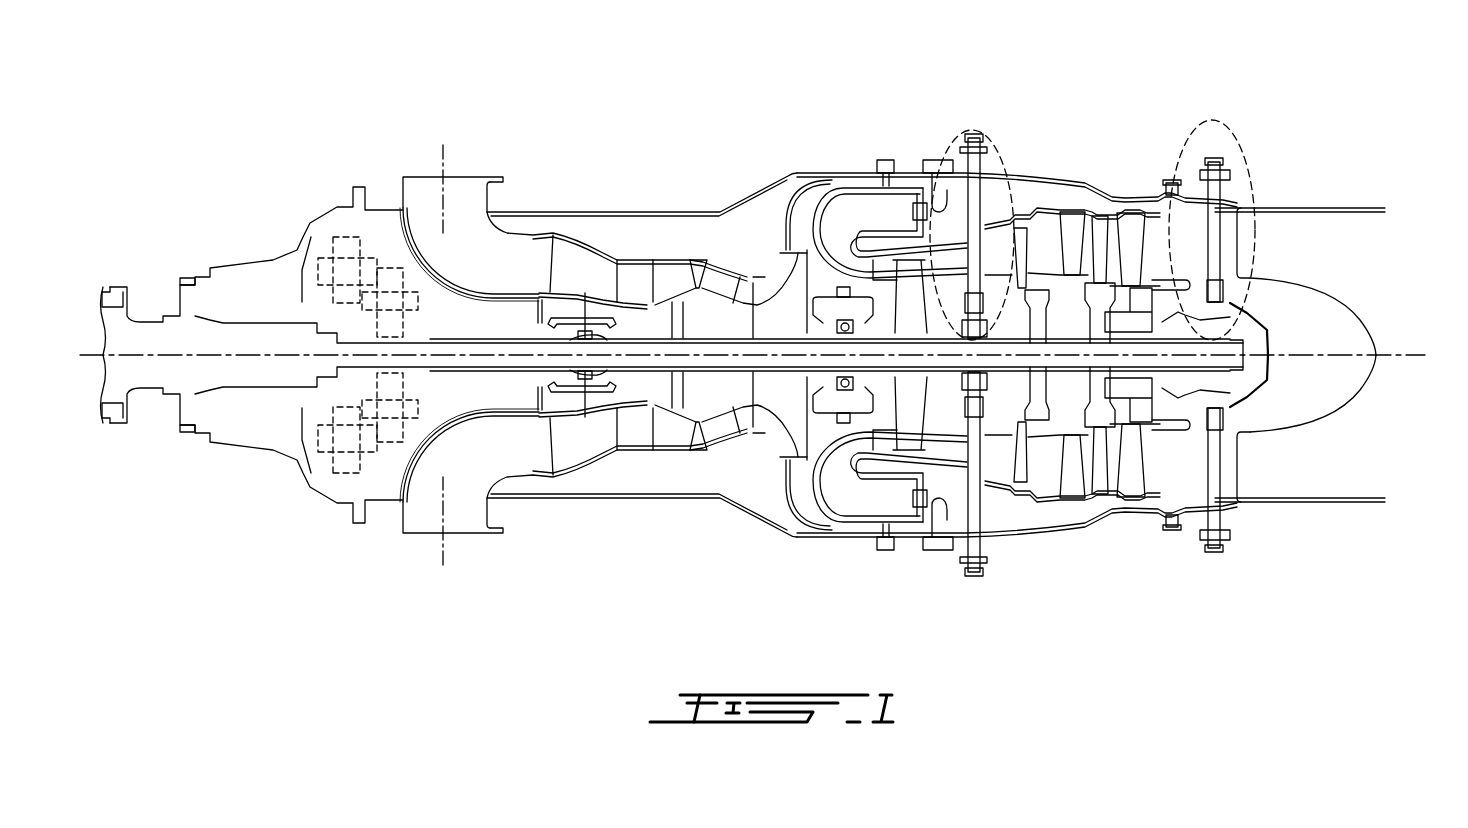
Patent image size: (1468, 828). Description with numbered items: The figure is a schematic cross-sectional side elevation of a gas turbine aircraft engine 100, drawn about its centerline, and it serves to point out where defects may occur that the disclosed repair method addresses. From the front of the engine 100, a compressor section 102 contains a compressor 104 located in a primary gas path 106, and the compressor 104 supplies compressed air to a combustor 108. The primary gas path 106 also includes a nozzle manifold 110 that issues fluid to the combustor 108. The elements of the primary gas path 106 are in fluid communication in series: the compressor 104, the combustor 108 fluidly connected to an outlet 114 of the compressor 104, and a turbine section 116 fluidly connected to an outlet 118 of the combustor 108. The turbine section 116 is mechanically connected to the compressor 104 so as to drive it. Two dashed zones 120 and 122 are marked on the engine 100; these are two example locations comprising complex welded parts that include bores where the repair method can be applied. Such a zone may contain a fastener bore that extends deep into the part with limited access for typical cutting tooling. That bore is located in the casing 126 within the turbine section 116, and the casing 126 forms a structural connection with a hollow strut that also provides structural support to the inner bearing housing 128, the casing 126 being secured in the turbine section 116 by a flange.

The engine 100 is at (215, 188).
The compressor section 102 is at (630, 196).
The compressor 104 is at (675, 435).
The primary gas path 106 is at (524, 452).
The combustor 108 is at (858, 210).
The nozzle manifold 110 is at (918, 150).
The outlet of the compressor 114 is at (838, 547).
The turbine section 116 is at (1096, 160).
The outlet of the combustor 118 is at (890, 440).
The zone 120 is at (1255, 187).
The zone 122 is at (1002, 150).
The casing 126 is at (1272, 300).
The inner bearing housing 128 is at (1353, 209).